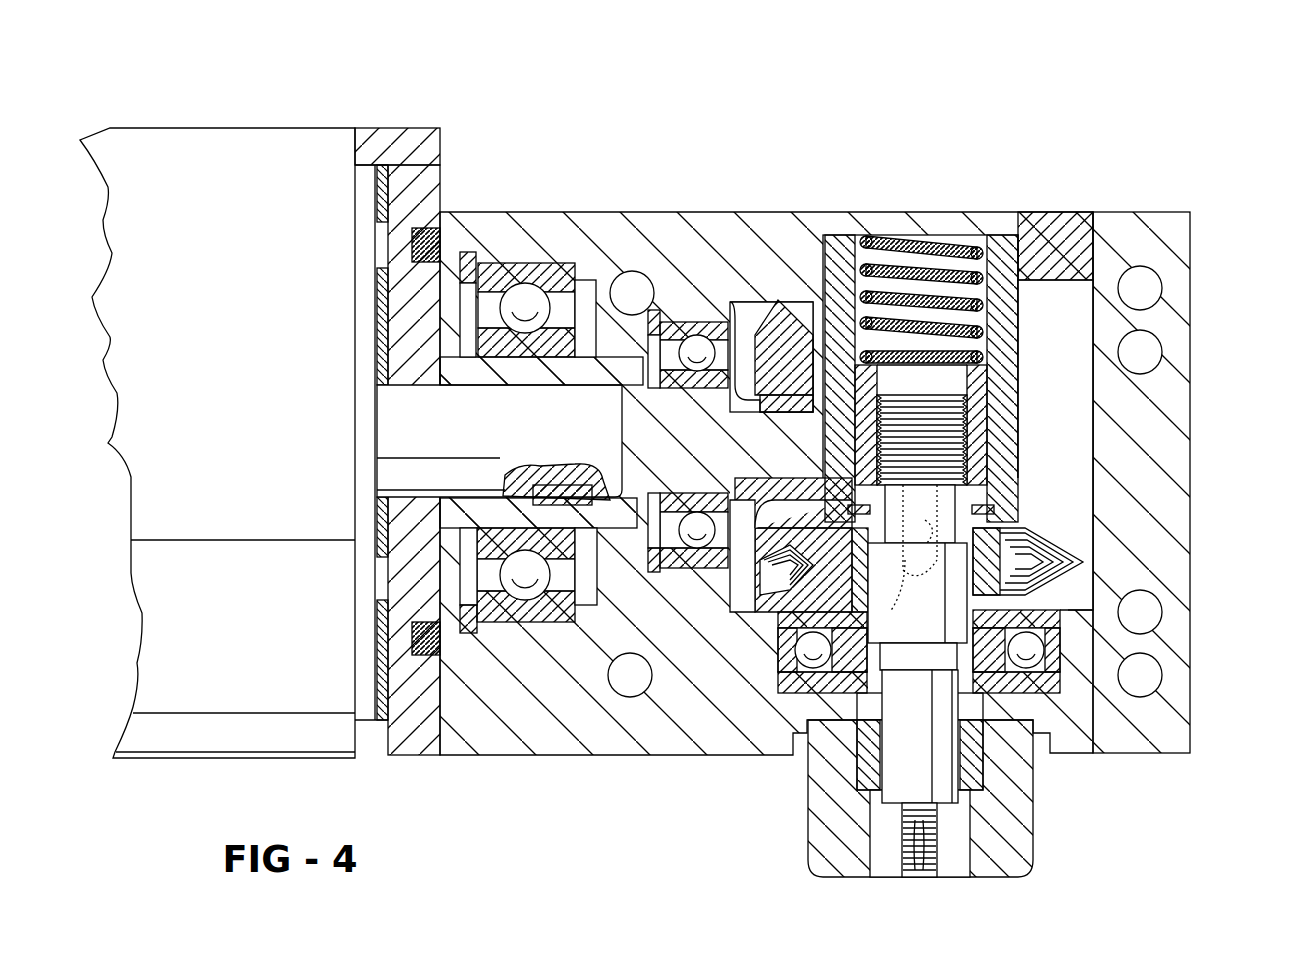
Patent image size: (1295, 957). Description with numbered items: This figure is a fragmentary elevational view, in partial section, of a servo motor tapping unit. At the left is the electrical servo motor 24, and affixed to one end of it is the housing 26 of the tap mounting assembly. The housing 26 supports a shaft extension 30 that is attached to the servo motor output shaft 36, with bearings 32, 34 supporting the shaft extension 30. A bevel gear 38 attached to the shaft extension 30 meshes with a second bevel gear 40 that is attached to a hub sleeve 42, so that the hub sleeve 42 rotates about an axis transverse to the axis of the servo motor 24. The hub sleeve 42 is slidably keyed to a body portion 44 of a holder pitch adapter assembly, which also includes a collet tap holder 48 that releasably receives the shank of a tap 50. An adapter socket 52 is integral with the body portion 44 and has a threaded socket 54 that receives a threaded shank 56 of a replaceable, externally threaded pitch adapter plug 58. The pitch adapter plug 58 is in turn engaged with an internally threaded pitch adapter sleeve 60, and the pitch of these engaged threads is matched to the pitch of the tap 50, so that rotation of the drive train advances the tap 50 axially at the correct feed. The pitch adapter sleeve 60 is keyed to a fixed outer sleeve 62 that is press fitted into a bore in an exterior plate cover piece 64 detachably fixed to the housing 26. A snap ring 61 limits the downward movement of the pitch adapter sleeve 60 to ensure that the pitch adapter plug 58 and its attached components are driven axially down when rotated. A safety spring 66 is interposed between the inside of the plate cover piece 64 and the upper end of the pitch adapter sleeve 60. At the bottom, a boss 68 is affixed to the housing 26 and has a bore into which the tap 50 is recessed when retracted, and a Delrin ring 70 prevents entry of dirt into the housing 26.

The electrical servo motor 24 is at (262, 158).
The housing 26 is at (647, 205).
The shaft extension 30 is at (627, 528).
The bearing 32 is at (497, 277).
The bearing 34 is at (670, 322).
The servo motor output shaft 36 is at (582, 430).
The bevel gear 38 is at (798, 300).
The second bevel gear 40 is at (1063, 550).
The hub sleeve 42 is at (755, 610).
The body portion 44 is at (1093, 613).
The collet tap holder 48 is at (943, 787).
The tap 50 is at (905, 837).
The adapter socket 52 is at (947, 522).
The threaded socket 54 is at (935, 510).
The threaded shank 56 is at (888, 593).
The pitch adapter plug 58 is at (948, 412).
The pitch adapter sleeve 60 is at (977, 375).
The snap ring 61 is at (1018, 505).
The fixed outer sleeve 62 is at (1018, 292).
The exterior plate cover piece 64 is at (1043, 232).
The safety spring 66 is at (919, 245).
The boss 68 is at (823, 805).
The Delrin ring 70 is at (977, 753).